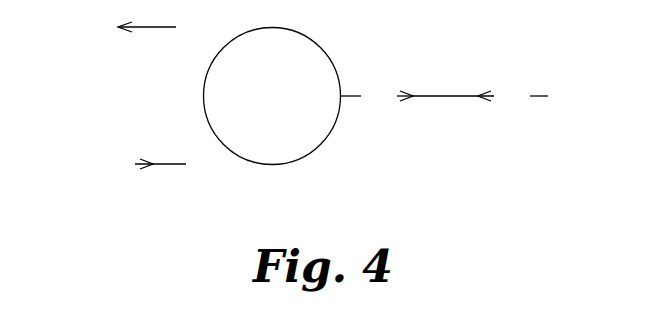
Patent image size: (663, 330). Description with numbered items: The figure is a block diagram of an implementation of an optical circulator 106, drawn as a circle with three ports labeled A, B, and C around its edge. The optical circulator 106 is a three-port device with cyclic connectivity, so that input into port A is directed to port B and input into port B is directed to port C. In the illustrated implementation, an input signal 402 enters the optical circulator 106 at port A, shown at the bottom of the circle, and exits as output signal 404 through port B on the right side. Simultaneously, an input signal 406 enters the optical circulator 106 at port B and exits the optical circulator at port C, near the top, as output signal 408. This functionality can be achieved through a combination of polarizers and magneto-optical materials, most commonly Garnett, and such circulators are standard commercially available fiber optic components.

The optical circulator 106 is at (292, 107).
The input signal 402 is at (272, 164).
The output signal 404 is at (377, 96).
The input signal 406 is at (480, 96).
The output signal 408 is at (273, 27).